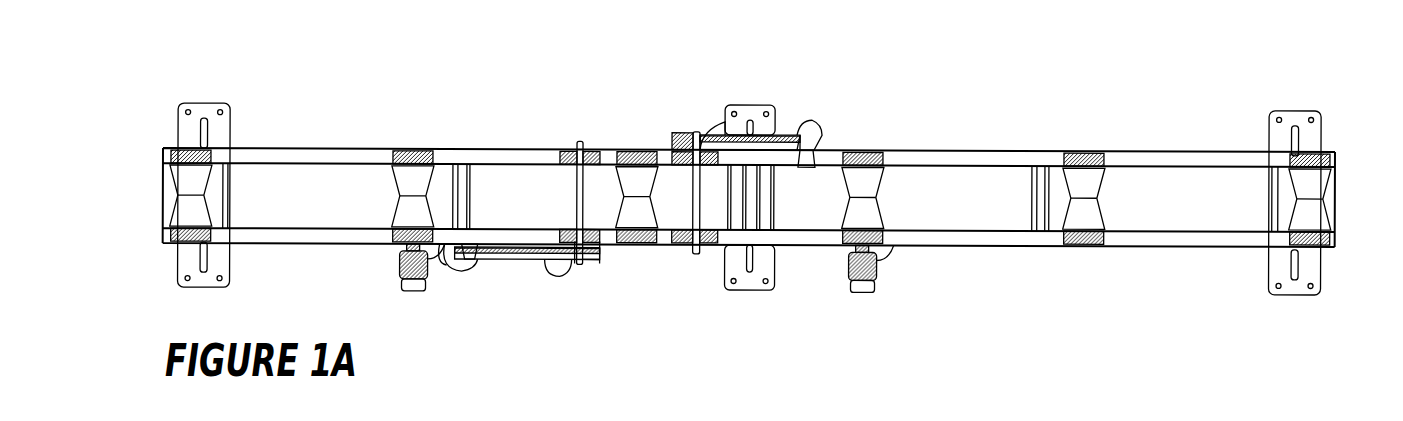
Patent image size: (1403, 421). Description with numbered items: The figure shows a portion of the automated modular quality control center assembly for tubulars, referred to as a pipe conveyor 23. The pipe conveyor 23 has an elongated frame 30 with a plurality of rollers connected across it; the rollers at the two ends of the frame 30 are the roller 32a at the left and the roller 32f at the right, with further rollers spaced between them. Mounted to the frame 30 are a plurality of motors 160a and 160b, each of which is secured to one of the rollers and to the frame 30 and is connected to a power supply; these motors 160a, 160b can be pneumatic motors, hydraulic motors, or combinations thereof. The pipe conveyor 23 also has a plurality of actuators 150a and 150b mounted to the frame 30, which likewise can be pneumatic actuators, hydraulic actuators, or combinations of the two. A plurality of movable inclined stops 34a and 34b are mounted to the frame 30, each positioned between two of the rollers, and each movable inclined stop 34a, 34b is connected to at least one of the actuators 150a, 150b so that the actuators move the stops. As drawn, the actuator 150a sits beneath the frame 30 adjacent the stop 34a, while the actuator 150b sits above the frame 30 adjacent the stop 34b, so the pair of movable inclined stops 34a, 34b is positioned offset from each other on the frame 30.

The pipe conveyor 23 is at (1275, 43).
The frame 30 is at (963, 150).
The roller 32a is at (178, 186).
The roller 32f is at (1315, 185).
The movable inclined stop 34a is at (580, 145).
The movable inclined stop 34b is at (697, 134).
The actuator 150a is at (503, 262).
The actuator 150b is at (788, 135).
The motor 160a is at (413, 290).
The motor 160b is at (862, 290).